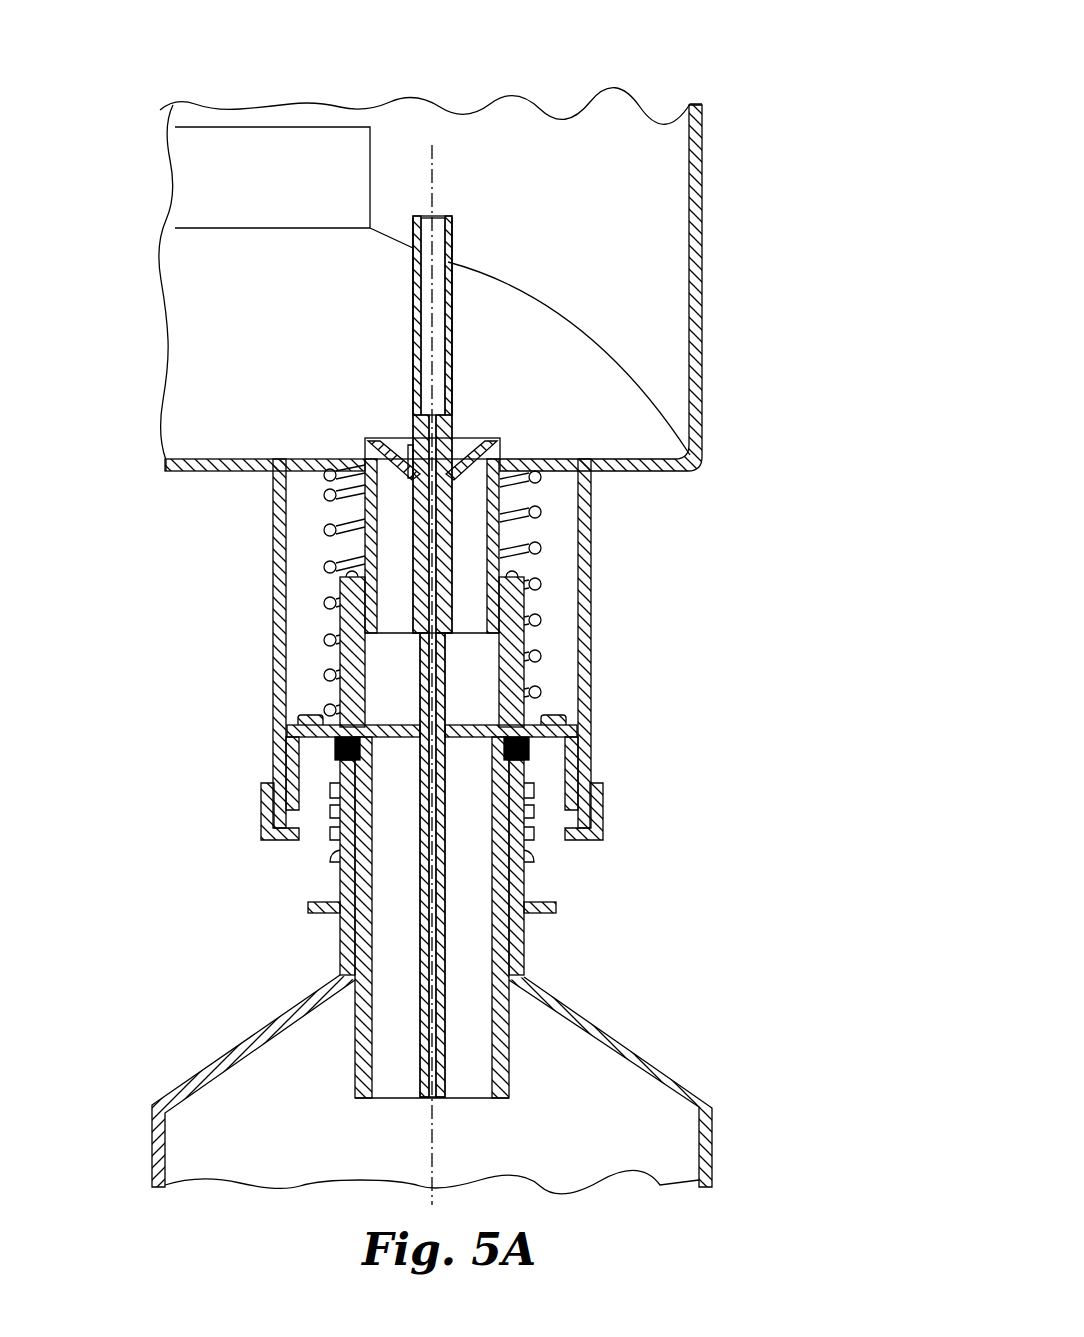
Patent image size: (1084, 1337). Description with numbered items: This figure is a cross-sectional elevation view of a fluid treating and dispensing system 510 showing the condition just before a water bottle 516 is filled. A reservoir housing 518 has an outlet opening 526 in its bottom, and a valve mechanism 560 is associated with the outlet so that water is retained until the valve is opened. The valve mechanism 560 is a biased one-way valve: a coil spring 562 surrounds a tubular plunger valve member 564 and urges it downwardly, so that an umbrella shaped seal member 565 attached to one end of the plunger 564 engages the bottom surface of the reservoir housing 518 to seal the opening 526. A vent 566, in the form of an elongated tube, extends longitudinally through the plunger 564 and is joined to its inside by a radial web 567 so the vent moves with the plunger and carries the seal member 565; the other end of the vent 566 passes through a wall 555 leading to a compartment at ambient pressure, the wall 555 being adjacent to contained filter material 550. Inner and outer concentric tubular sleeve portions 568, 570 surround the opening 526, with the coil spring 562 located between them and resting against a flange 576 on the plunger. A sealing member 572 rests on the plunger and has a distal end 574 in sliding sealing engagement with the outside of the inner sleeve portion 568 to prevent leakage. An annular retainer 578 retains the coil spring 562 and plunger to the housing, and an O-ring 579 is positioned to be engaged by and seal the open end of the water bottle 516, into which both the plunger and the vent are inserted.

The fluid treating and dispensing system 510 is at (690, 76).
The water bottle 516 is at (612, 1037).
The reservoir housing 518 is at (704, 229).
The outlet opening 526 is at (490, 484).
The filter material 550 is at (175, 160).
The wall 555 is at (580, 335).
The valve mechanism 560 is at (537, 443).
The coil spring 562 is at (542, 622).
The tubular plunger valve member 564 is at (446, 572).
The umbrella shaped seal member 565 is at (392, 436).
The vent 566 is at (450, 243).
The radial web 567 is at (472, 726).
The inner tubular sleeve portion 568 is at (365, 514).
The outer tubular sleeve portion 570 is at (283, 652).
The sealing member 572 is at (340, 700).
The distal end 574 is at (352, 578).
The flange 576 is at (335, 750).
The annular retainer 578 is at (577, 842).
The O-ring 579 is at (531, 752).